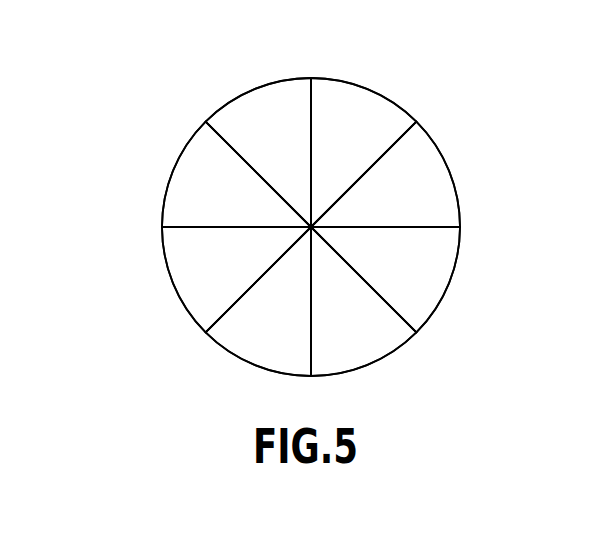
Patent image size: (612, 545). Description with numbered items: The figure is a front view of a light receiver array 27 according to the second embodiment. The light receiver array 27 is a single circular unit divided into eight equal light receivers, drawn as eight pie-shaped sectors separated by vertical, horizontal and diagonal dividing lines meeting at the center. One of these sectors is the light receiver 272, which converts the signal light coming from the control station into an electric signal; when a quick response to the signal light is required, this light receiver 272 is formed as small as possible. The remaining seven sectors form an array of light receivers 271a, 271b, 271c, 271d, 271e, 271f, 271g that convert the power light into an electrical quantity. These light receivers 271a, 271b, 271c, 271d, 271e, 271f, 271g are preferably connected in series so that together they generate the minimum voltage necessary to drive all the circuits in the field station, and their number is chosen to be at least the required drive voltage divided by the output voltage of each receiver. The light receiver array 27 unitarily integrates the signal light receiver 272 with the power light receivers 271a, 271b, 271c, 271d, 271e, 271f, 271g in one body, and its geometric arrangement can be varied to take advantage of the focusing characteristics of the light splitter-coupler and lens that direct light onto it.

The light receiver array 27 is at (174, 111).
The light receiver 271a is at (385, 139).
The light receiver 271b is at (435, 204).
The light receiver 271c is at (435, 272).
The light receiver 271d is at (375, 339).
The light receiver 271e is at (298, 336).
The light receiver 271f is at (237, 274).
The light receiver 271g is at (235, 207).
The light receiver 272 is at (286, 139).